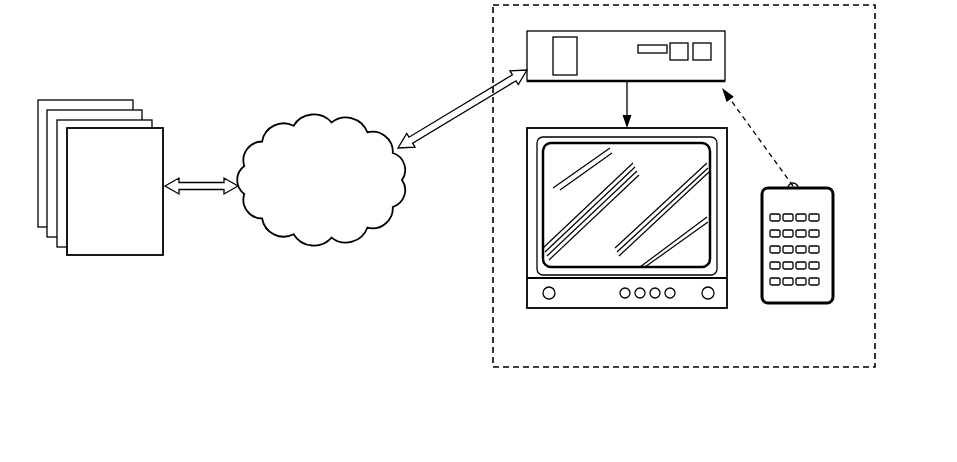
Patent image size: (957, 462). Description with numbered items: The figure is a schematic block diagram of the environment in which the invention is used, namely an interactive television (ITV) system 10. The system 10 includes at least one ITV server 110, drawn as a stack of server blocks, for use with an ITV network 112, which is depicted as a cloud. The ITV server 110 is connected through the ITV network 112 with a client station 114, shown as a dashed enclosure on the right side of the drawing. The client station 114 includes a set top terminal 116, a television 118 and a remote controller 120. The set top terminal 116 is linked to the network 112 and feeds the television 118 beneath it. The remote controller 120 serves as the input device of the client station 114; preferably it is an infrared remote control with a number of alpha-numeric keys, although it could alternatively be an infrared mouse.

The interactive television system 10 is at (263, 72).
The ITV server 110 is at (142, 113).
The ITV network 112 is at (290, 226).
The client station 114 is at (755, 367).
The set top terminal 116 is at (727, 73).
The television 118 is at (527, 279).
The remote controller 120 is at (835, 217).